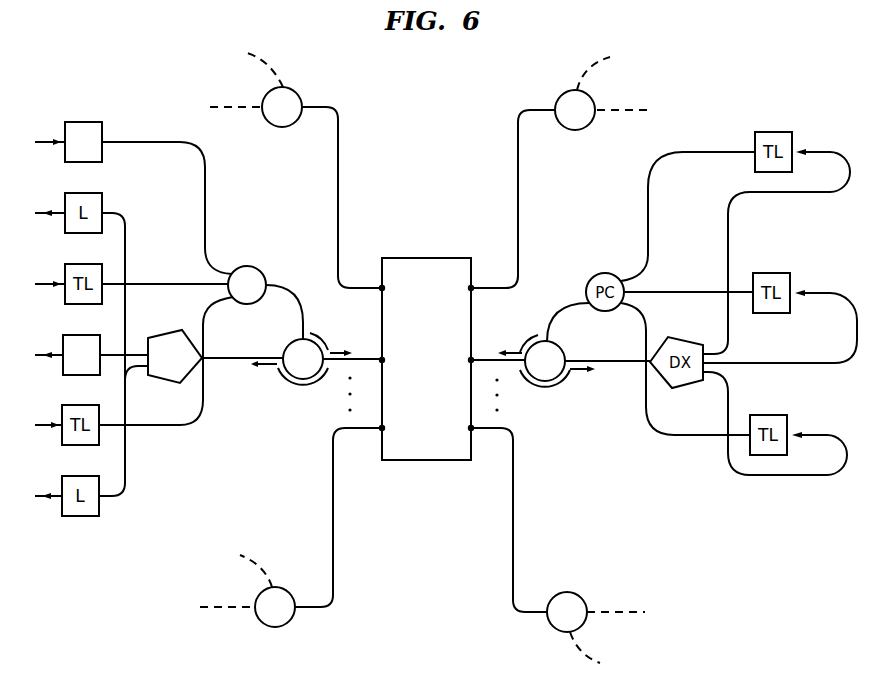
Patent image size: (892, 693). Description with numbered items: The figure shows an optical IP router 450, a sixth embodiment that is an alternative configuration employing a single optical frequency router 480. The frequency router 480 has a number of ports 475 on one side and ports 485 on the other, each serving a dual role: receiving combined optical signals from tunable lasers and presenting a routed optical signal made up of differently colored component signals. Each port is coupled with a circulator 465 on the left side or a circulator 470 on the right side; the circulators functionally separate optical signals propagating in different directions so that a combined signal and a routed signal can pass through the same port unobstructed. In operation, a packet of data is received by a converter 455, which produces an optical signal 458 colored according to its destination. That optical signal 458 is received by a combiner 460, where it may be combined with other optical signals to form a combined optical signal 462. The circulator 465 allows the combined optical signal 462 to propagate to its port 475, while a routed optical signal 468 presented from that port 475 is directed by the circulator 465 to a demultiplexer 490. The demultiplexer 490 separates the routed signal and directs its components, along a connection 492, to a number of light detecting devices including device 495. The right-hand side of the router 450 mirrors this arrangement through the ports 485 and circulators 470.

The optical IP router 450 is at (734, 77).
The converter 455 is at (96, 122).
The optical signal 458 is at (205, 170).
The combiner 460 is at (259, 271).
The combined optical signal 462 is at (322, 328).
The circulator 465 is at (257, 642).
The routed optical signal 468 is at (280, 379).
The circulator 470 is at (584, 128).
The port 475 is at (372, 474).
The optical frequency router 480 is at (413, 460).
The port 485 is at (478, 266).
The demultiplexer 490 is at (182, 331).
The optical fiber from demultiplexer to locker 492 is at (123, 351).
The light detecting device 495 is at (74, 378).